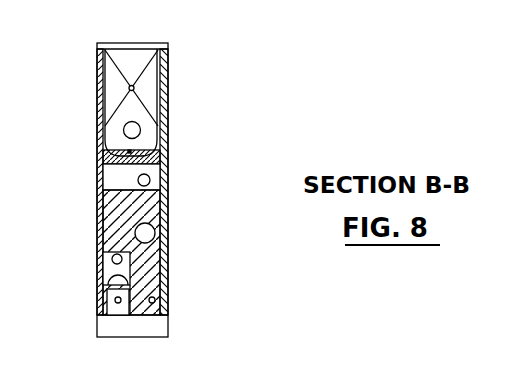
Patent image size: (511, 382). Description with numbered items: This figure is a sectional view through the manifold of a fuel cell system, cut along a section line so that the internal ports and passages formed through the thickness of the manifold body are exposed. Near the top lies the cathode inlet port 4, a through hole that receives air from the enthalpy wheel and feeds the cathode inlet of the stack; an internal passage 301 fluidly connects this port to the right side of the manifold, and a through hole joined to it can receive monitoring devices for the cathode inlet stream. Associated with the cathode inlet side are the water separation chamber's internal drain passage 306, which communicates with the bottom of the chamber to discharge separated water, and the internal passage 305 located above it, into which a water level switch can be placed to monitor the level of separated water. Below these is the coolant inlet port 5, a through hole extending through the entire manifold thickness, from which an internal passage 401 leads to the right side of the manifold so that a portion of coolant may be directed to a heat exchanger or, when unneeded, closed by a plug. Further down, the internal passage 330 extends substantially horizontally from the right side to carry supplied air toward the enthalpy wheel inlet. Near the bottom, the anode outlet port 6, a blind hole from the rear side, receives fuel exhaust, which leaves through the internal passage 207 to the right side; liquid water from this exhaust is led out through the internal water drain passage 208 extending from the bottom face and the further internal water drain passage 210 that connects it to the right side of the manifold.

The cathode inlet port 4 is at (152, 88).
The coolant inlet port 5 is at (160, 170).
The anode outlet port 6 is at (106, 272).
The internal passage 207 is at (104, 255).
The internal water drain passage 208 is at (132, 287).
The internal water drain passage 210 is at (110, 305).
The internal passage 301 is at (132, 85).
The internal passage 305 is at (124, 131).
The internal drain passage 306 is at (125, 152).
The internal passage 330 is at (155, 233).
The internal passage 401 is at (150, 180).